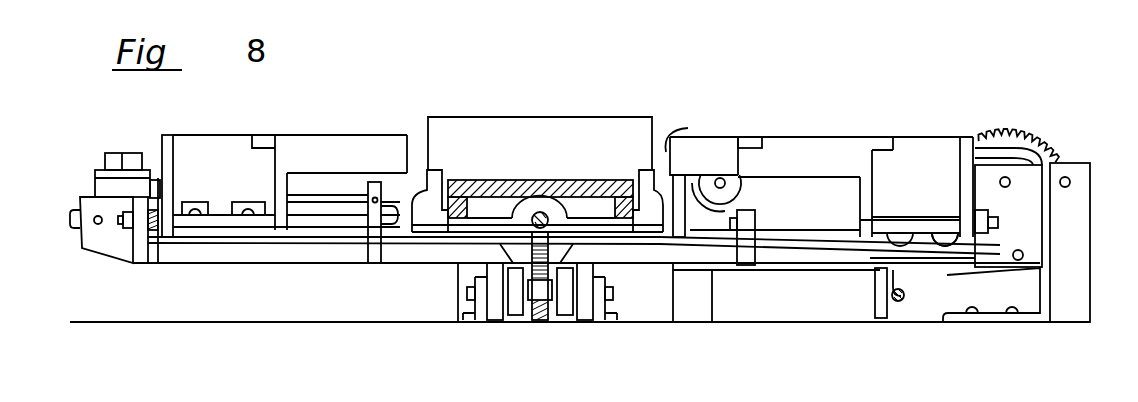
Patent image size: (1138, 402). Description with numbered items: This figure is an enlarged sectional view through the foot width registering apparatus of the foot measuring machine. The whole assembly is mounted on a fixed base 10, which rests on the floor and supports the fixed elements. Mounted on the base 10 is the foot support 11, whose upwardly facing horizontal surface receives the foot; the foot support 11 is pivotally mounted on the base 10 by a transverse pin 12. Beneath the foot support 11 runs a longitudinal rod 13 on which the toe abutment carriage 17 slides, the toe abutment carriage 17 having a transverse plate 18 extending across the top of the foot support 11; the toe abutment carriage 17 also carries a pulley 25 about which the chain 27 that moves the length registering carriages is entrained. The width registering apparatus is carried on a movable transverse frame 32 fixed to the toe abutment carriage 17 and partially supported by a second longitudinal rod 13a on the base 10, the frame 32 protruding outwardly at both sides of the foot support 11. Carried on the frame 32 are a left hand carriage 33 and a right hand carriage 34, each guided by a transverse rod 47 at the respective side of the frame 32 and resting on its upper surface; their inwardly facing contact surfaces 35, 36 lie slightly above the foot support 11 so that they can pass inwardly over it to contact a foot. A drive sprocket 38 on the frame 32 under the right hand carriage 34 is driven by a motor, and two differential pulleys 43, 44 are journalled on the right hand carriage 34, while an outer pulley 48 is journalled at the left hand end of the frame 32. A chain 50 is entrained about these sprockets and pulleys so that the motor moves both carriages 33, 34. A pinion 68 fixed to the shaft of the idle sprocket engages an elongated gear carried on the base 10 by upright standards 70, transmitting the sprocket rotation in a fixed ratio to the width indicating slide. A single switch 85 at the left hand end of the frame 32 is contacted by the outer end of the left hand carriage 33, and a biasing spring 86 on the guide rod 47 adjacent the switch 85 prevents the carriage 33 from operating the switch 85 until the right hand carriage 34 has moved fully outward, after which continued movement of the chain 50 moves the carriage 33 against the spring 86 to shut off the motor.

The fixed base 10 is at (682, 108).
The foot support 11 is at (545, 185).
The transverse pin 12 is at (610, 292).
The longitudinal rod 13 is at (534, 224).
The second longitudinal rod 13a is at (905, 295).
The toe abutment carriage 17 is at (496, 205).
The transverse plate 18 is at (515, 125).
The pulley 25 is at (530, 312).
The chain 27 is at (540, 302).
The transverse frame 32 is at (323, 257).
The left hand carriage 33 is at (347, 133).
The right hand carriage 34 is at (831, 127).
The contact surface 35 is at (416, 150).
The contact surface 36 is at (691, 133).
The drive sprocket 38 is at (723, 197).
The differential pulley 43 is at (897, 243).
The differential pulley 44 is at (938, 240).
The transverse rod 47 is at (215, 218).
The outer pulley 48 is at (1027, 278).
The chain 50 is at (840, 212).
The pinion 68 is at (1032, 142).
The upright standard 70 is at (698, 292).
The switch 85 is at (138, 150).
The biasing spring 86 is at (153, 232).